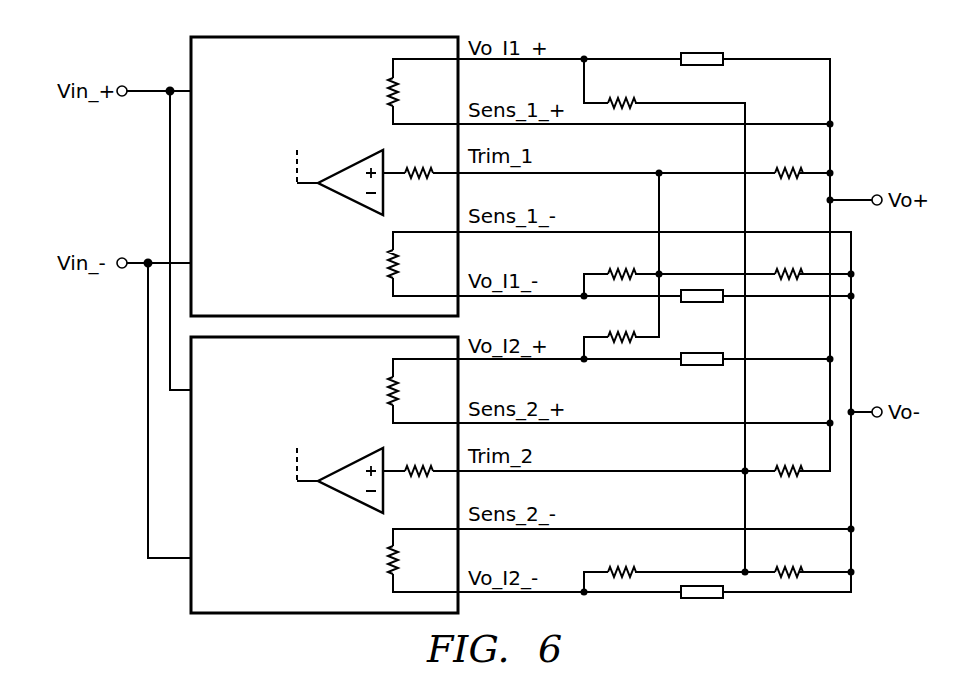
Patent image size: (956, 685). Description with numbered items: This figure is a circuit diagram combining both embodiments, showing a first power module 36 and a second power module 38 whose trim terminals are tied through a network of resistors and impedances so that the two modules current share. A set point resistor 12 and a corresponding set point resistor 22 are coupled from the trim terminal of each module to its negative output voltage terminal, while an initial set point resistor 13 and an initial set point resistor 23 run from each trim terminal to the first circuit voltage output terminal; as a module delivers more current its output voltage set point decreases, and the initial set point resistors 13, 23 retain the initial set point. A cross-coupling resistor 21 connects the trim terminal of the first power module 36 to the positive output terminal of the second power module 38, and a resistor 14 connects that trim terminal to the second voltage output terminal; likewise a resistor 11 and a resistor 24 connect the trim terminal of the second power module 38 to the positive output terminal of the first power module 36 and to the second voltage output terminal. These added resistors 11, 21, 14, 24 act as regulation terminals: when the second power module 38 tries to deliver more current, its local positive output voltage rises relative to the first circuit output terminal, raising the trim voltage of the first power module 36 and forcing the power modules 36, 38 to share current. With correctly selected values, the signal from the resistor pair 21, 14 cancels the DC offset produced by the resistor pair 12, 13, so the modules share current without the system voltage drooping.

The first power module 36 is at (191, 63).
The second power module 38 is at (324, 614).
The resistor R11 / impedance Z11 11 is at (666, 80).
The resistor R12 / impedance Z12 12 is at (666, 286).
The resistor R13 13 is at (789, 161).
The resistor R14 14 is at (789, 261).
The resistor R21 / impedance Z21 21 is at (666, 350).
The resistor R22 / impedance Z22 22 is at (666, 583).
The resistor R23 23 is at (789, 458).
The resistor R24 24 is at (789, 560).